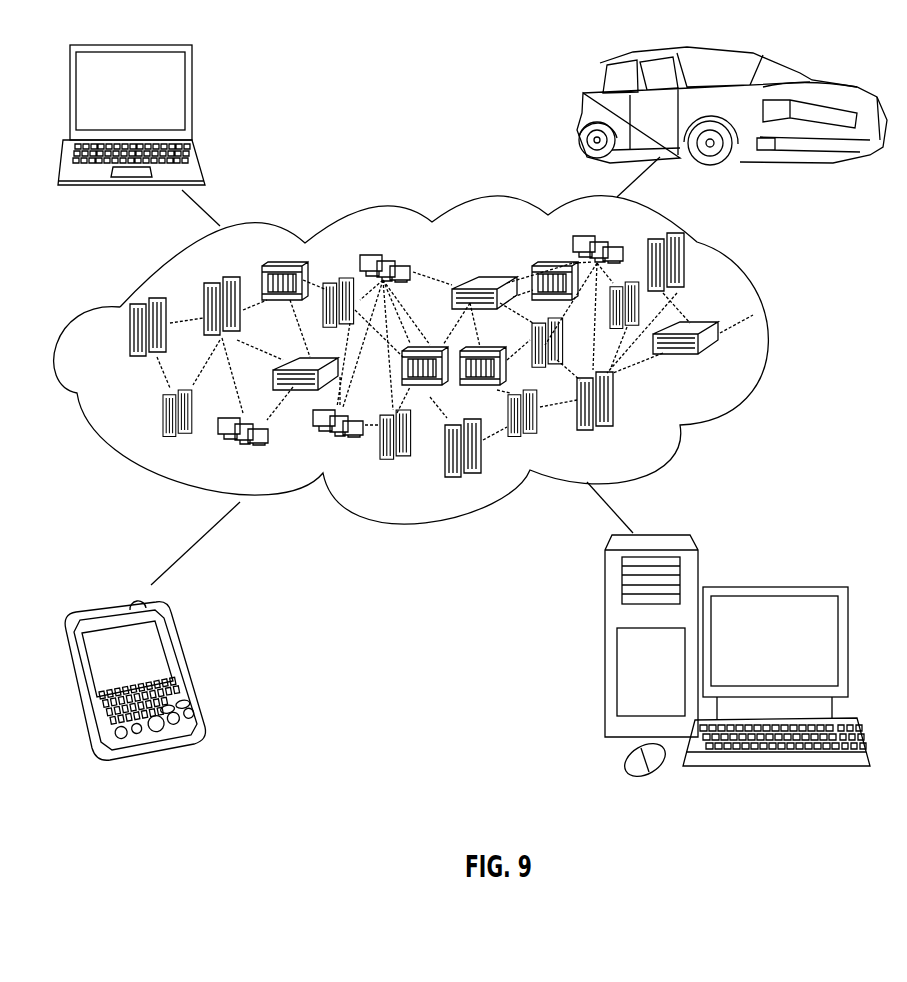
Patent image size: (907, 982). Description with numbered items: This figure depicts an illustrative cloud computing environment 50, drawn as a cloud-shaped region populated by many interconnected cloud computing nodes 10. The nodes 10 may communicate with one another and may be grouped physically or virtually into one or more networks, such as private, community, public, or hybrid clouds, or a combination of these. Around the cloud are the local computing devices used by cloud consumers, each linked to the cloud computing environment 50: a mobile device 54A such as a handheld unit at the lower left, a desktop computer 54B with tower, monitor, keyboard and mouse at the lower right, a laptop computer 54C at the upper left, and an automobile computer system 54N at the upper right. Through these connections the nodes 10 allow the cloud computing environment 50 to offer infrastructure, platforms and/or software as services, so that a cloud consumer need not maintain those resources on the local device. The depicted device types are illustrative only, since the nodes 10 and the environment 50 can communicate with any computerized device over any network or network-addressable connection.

The cloud computing node 10 is at (724, 362).
The cloud computing environment 50 is at (777, 333).
The mobile device 54A is at (182, 668).
The desktop computer 54B is at (772, 586).
The laptop computer 54C is at (192, 100).
The automobile computer system 54N is at (580, 113).